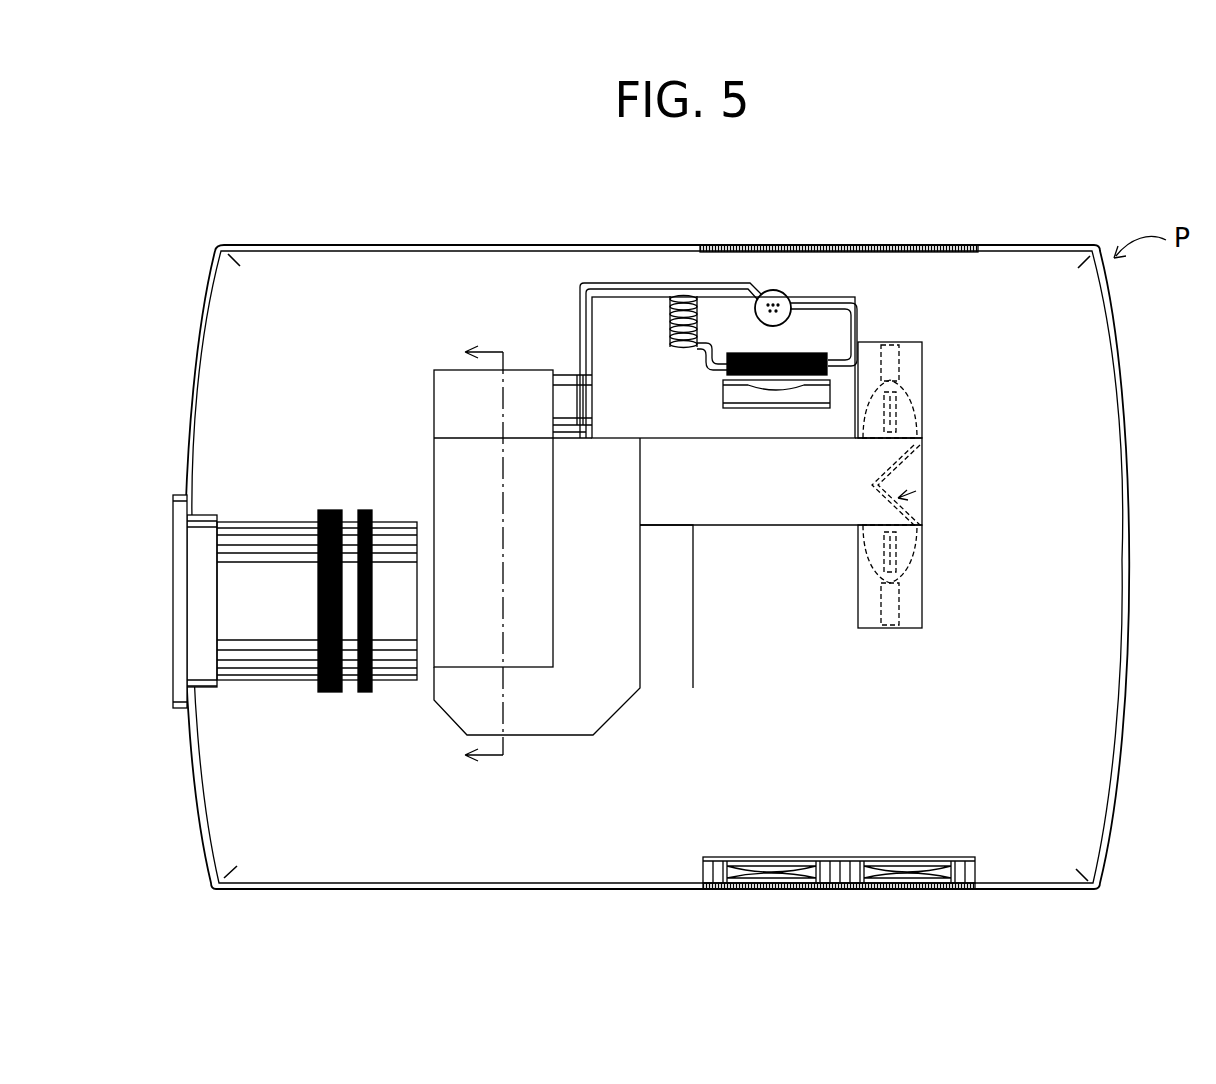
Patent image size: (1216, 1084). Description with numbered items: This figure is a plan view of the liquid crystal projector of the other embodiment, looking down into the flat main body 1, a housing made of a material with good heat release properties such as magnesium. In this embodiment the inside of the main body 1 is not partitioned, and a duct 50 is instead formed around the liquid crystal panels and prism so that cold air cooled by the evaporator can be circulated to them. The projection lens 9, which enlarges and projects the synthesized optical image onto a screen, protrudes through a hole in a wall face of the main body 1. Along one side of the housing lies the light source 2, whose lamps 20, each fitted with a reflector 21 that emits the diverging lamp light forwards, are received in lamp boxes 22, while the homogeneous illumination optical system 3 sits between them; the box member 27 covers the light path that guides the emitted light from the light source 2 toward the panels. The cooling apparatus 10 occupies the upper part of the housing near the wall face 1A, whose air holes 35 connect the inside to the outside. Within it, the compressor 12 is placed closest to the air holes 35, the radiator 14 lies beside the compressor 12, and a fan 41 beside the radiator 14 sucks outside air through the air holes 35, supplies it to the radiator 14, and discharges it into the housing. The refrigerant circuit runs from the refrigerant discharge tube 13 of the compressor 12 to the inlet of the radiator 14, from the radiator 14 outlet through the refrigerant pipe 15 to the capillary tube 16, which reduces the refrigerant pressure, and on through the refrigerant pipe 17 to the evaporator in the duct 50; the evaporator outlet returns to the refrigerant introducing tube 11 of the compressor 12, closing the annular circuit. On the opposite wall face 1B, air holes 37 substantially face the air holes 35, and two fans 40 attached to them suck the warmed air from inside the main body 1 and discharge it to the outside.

The main body 1 is at (1120, 726).
The wall face 1A is at (1036, 246).
The wall face 1B is at (1014, 890).
The light source 2 is at (927, 600).
The homogeneous illumination optical system 3 is at (918, 492).
The projection lens 9 is at (200, 558).
The cooling apparatus 10 is at (870, 284).
The refrigerant introducing tube 11 is at (620, 287).
The compressor 12 is at (770, 290).
The refrigerant discharge tube 13 is at (832, 336).
The radiator 14 is at (797, 353).
The refrigerant pipe 15 is at (716, 362).
The capillary tube 16 is at (690, 296).
The refrigerant pipe 17 is at (594, 395).
The lamp 20 is at (918, 405).
The reflector 21 is at (915, 418).
The lamp box 22 is at (923, 352).
The box member 27 is at (779, 528).
The air holes 35 is at (962, 246).
The air holes 37 is at (975, 890).
The fan 40 is at (778, 870).
The fan 41 is at (725, 392).
The duct 50 is at (451, 681).